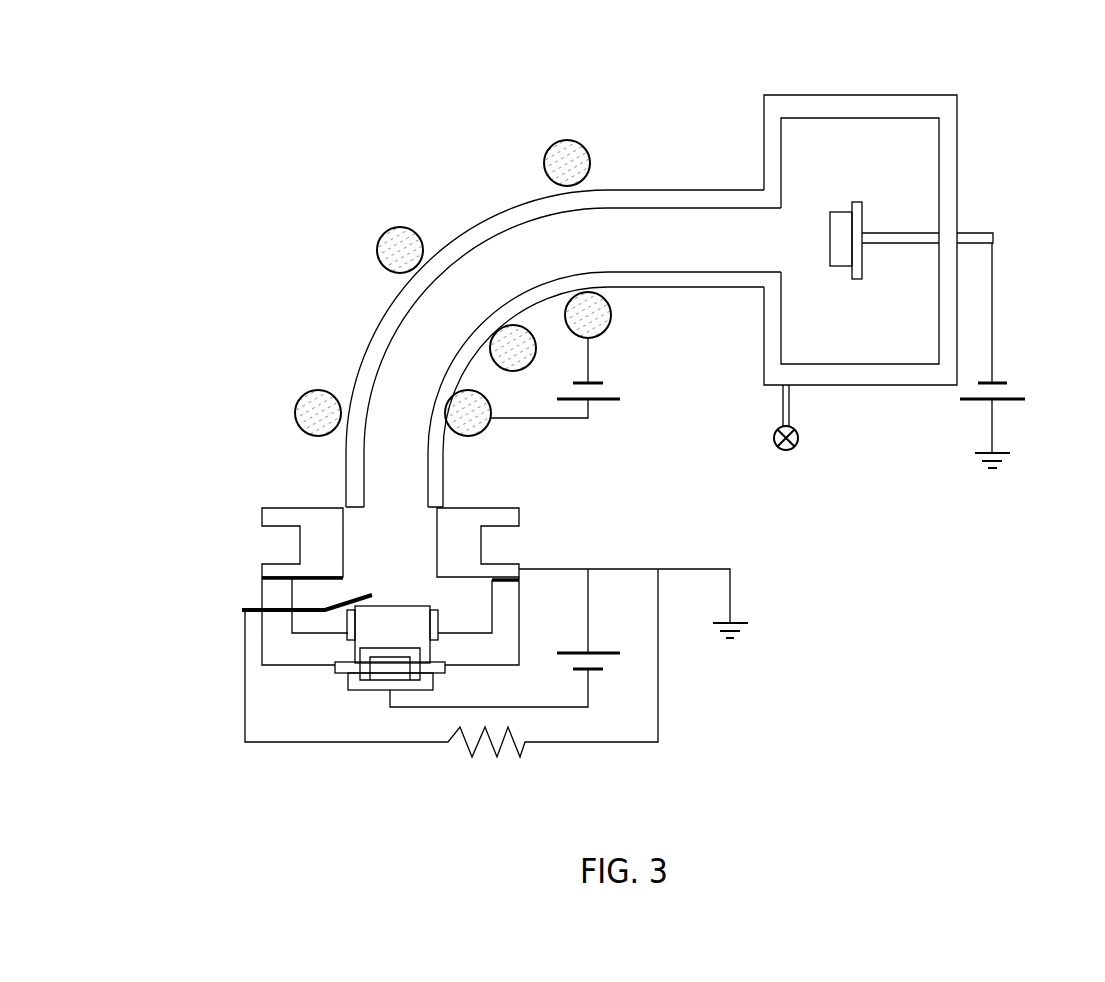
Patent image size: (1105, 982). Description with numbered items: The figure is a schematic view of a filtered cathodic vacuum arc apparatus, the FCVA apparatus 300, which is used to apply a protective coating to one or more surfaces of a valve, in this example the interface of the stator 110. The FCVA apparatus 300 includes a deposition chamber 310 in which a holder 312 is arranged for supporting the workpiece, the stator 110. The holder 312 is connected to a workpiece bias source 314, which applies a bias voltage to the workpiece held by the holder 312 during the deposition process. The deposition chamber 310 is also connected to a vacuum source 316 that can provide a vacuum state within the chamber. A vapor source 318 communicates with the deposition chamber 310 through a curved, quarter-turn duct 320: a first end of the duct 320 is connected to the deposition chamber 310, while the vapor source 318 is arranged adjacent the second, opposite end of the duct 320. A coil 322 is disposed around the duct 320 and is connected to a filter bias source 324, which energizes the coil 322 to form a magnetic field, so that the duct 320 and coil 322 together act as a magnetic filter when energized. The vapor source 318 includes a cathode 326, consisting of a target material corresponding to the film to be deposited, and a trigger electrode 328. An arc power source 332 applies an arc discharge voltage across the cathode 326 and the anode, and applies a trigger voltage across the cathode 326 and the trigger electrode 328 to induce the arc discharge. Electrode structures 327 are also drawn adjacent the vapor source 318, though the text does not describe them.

The FCVA apparatus 300 is at (315, 114).
The deposition chamber 310 is at (957, 95).
The holder 312 is at (862, 202).
The stator 110 is at (838, 266).
The workpiece bias source 314 is at (1029, 376).
The vacuum source 316 is at (786, 450).
The vapor source 318 is at (214, 552).
The curved duct 320 is at (363, 340).
The coil 322 is at (453, 288).
The filter bias source 324 is at (619, 384).
The cathode 326 is at (387, 605).
The extraction electrodes 327 is at (519, 520).
The trigger electrode 328 is at (357, 595).
The arc power source 332 is at (605, 639).